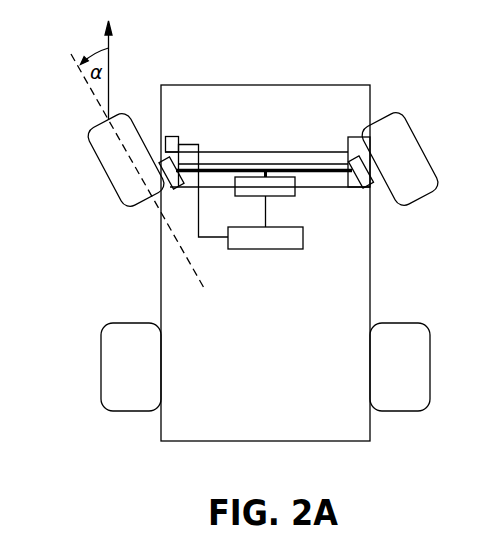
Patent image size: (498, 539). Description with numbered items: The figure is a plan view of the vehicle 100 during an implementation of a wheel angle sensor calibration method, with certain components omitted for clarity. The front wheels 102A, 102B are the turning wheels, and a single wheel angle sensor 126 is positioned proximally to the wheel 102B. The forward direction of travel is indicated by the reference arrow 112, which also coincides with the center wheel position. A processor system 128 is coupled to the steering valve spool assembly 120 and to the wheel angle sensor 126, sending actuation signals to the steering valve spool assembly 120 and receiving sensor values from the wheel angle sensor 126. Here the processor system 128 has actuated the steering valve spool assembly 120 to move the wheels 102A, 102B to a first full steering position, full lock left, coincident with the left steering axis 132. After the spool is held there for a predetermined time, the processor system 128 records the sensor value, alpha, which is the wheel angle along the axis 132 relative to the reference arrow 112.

The vehicle 100 is at (286, 68).
The wheel 102A is at (427, 142).
The wheel 102B is at (103, 173).
The reference arrow 112 is at (108, 52).
The steering valve spool assembly 120 is at (293, 196).
The wheel angle sensor 126 is at (172, 137).
The processor system 128 is at (266, 249).
The left steering axis 132 is at (88, 85).